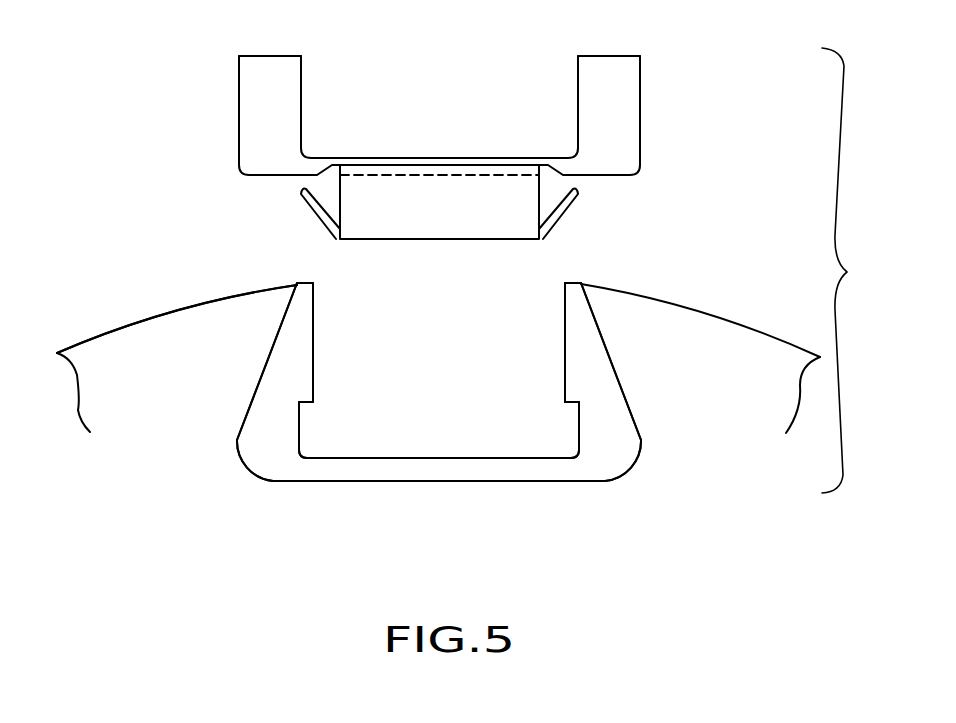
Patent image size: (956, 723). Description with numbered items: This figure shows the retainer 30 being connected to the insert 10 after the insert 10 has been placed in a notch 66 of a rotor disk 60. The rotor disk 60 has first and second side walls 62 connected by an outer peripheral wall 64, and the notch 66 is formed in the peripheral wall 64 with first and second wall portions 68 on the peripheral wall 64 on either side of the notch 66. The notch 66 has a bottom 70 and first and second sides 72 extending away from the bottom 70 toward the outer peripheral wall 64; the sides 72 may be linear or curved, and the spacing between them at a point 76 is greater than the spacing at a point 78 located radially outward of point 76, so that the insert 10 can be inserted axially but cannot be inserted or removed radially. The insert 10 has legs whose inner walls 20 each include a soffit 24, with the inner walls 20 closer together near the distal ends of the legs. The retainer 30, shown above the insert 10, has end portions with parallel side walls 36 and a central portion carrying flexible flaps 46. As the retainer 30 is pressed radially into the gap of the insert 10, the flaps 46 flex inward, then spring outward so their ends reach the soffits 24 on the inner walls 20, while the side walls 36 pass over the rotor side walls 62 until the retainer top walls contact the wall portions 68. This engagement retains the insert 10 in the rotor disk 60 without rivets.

The insert 10 is at (565, 470).
The inner wall 20 is at (313, 345).
The soffit 24 is at (302, 408).
The retainer 30 is at (213, 43).
The side wall 36 is at (253, 108).
The flexible flap 46 is at (313, 205).
The rotor disk 60 is at (85, 350).
The side wall 62 is at (130, 442).
The outer peripheral wall 64 is at (118, 323).
The notch 66 is at (262, 505).
The wall portion 68 is at (246, 275).
The bottom 70 is at (462, 481).
The side 72 is at (253, 393).
The point 76 is at (240, 423).
The point 78 is at (277, 328).